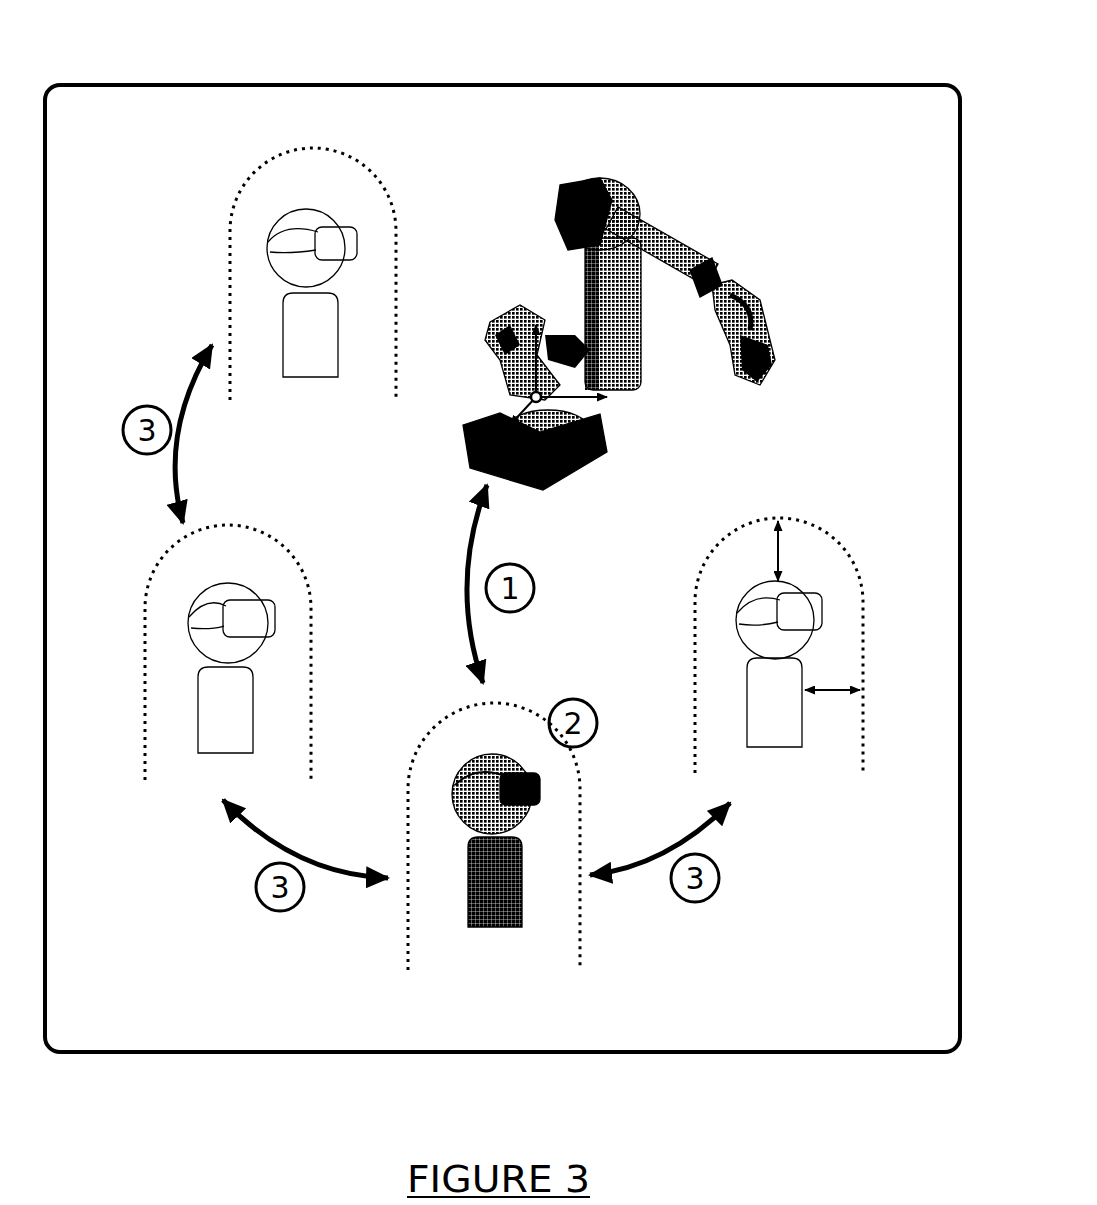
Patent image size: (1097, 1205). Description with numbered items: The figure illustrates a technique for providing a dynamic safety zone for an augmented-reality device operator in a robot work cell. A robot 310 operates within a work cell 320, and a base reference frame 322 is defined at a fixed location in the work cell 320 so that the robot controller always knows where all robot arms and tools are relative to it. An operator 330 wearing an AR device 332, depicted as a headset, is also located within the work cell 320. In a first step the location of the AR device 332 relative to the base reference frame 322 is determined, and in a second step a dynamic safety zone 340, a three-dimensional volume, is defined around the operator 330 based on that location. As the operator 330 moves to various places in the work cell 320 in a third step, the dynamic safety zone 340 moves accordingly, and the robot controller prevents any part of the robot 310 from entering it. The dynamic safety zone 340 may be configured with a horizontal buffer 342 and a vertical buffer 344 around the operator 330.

The robot 310 is at (652, 190).
The work cell 320 is at (715, 84).
The base reference frame 322 is at (622, 398).
The operator 330 is at (297, 377).
The AR device 332 is at (540, 790).
The dynamic safety zone 340 is at (383, 180).
The horizontal buffer 342 is at (832, 679).
The vertical buffer 344 is at (797, 551).